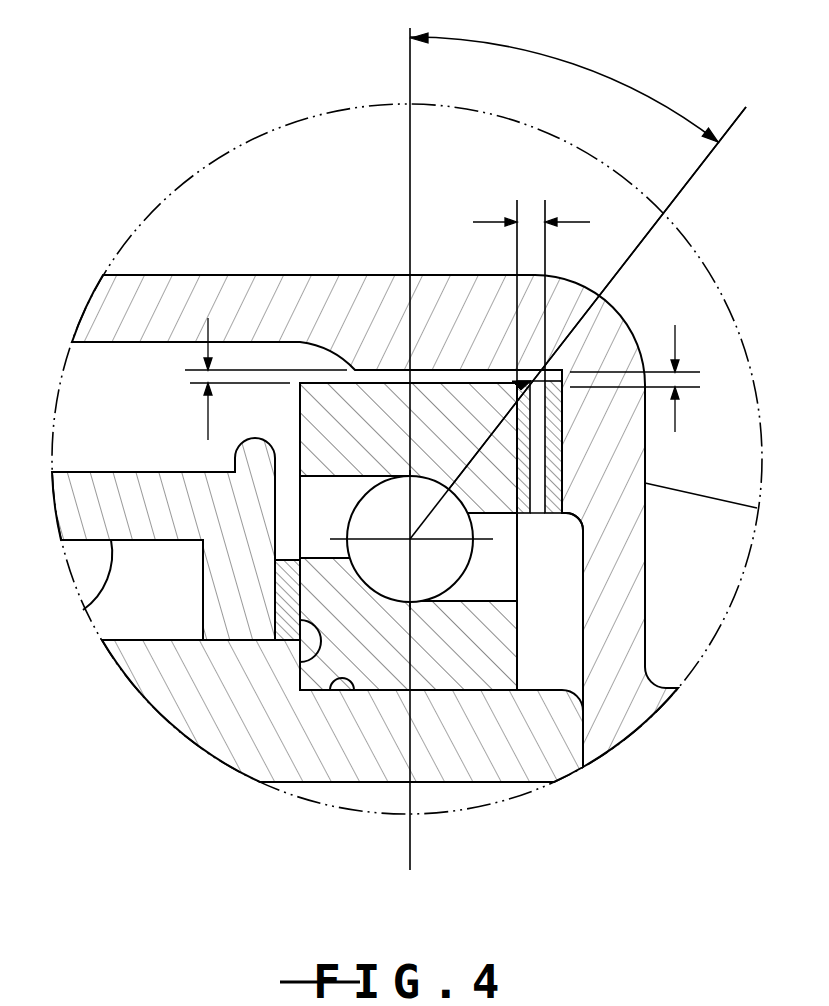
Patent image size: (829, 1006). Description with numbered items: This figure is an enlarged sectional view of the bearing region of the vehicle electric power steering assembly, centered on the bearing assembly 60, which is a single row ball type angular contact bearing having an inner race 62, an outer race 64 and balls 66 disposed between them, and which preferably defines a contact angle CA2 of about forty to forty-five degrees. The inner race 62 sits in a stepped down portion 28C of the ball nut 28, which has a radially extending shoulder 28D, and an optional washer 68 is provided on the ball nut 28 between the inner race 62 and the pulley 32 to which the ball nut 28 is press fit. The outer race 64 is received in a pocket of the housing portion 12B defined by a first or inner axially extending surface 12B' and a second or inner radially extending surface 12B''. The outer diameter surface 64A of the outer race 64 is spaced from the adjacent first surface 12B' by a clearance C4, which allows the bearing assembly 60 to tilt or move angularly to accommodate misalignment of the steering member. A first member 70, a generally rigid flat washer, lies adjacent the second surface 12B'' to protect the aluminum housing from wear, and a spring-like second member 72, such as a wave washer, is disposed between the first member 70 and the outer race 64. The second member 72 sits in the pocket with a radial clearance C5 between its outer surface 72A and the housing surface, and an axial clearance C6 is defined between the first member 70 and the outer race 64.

The second housing portion 12B is at (414, 488).
The first or inner axially extending surface 12B' is at (303, 363).
The second or inner radially extending surface 12B'' is at (554, 568).
The pulley 32 is at (83, 610).
The ball nut 28 is at (503, 760).
The stepped down portion 28C is at (328, 692).
The radially extending shoulder 28D is at (300, 663).
The bearing assembly 60 is at (553, 613).
The inner race 62 is at (492, 665).
The outer race 64 is at (315, 423).
The outer diameter surface 64A is at (458, 380).
The balls 66 is at (447, 563).
The washer 68 is at (285, 600).
The first member 70 is at (563, 453).
The second member 72 is at (538, 463).
The outer surface 72A is at (515, 383).
The clearance C4 is at (200, 374).
The radial clearance C5 is at (682, 381).
The axial clearance C6 is at (530, 217).
The contact angle CA2 is at (532, 48).